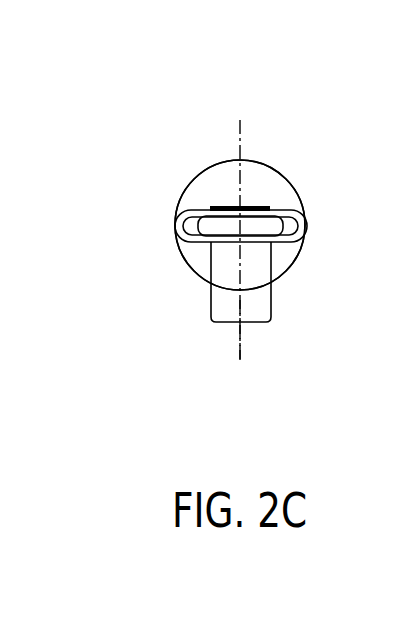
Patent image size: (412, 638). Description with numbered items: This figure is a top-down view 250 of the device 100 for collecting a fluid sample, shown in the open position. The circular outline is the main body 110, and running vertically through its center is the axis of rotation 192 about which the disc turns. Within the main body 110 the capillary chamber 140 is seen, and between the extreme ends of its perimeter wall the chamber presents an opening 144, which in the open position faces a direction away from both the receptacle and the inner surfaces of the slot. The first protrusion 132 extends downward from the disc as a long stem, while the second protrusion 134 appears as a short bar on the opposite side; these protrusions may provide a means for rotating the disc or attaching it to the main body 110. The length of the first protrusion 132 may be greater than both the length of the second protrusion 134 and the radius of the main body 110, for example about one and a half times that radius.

The device 100 is at (135, 142).
The top-down view 250 is at (302, 142).
The main body 110 is at (283, 200).
The second protrusion 134 is at (251, 205).
The capillary chamber 140 is at (205, 220).
The opening 144 is at (225, 222).
The first protrusion 132 is at (271, 310).
The axis of rotation 192 is at (248, 348).